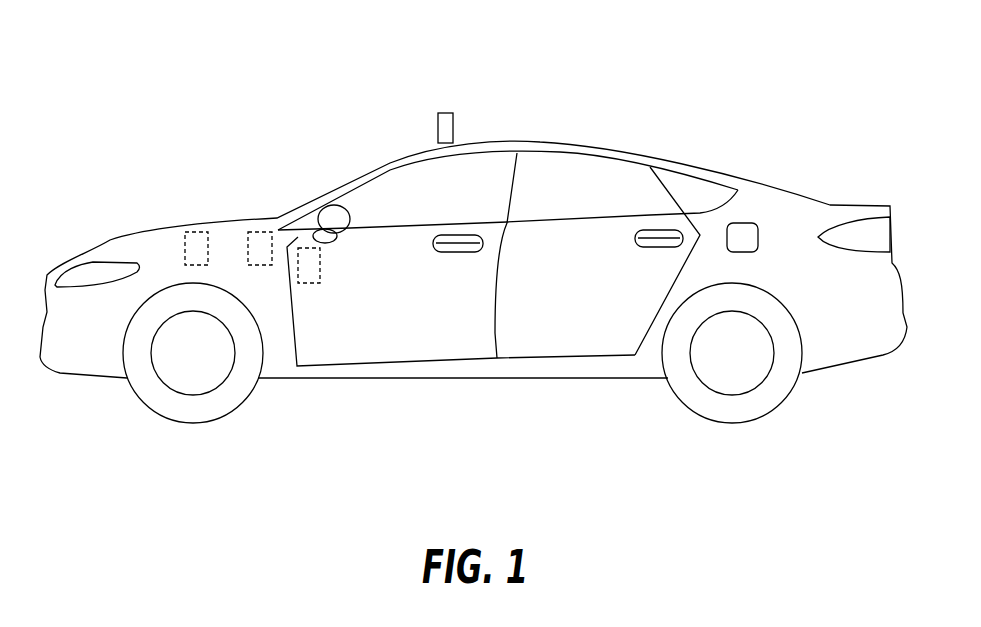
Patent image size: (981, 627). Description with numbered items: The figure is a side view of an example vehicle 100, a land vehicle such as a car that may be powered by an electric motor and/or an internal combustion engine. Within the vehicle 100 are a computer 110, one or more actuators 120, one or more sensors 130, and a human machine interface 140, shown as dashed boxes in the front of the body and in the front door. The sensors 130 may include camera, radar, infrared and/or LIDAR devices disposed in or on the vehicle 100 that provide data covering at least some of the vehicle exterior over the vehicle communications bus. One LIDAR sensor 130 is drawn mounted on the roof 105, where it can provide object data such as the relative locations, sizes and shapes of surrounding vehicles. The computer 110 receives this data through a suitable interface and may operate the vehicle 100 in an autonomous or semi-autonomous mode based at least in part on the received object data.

The vehicle 100 is at (473, 215).
The roof 105 is at (561, 145).
The computer 110 is at (260, 228).
The actuator 120 is at (190, 228).
The sensor 130 is at (447, 112).
The human machine interface 140 is at (307, 246).